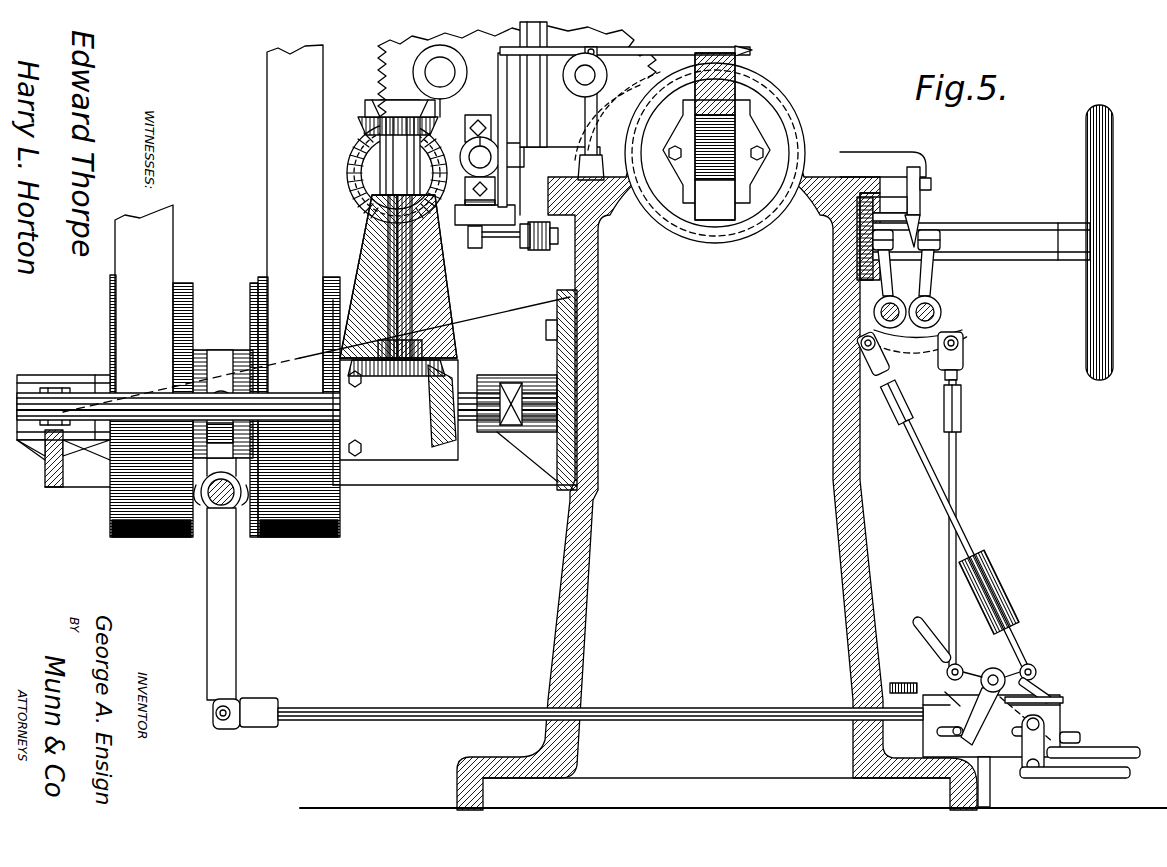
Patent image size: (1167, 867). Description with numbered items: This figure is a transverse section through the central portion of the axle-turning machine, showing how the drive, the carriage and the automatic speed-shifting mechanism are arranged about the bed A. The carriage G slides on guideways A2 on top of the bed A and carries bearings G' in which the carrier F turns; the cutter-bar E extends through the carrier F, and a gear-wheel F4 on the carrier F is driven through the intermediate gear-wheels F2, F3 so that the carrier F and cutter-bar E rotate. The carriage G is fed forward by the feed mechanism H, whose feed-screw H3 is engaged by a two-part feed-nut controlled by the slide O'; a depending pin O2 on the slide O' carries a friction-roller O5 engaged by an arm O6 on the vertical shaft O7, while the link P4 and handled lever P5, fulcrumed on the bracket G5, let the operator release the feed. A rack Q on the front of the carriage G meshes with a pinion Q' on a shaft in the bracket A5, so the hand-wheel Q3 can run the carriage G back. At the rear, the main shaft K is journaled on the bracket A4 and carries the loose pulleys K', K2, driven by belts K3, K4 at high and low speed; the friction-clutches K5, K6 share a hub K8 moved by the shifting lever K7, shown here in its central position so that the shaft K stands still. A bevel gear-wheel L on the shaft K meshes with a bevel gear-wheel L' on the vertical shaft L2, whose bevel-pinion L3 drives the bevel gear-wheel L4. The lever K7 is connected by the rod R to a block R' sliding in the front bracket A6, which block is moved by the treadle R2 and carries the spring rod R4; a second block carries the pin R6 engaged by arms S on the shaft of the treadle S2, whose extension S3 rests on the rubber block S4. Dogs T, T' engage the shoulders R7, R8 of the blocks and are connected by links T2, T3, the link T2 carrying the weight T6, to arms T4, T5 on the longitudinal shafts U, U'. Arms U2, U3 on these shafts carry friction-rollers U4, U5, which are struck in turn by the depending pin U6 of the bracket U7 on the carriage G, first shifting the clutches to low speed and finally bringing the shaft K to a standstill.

The bed A is at (717, 459).
The guideways A2 is at (578, 180).
The bracket A4 is at (430, 487).
The bracket A5 is at (1000, 260).
The bracket A6 is at (998, 745).
The cutter-bar E is at (740, 80).
The carrier F is at (770, 125).
The intermediate gear-wheel F2 is at (378, 58).
The second intermediate gear-wheel F3 is at (628, 40).
The gear-wheel F4 is at (683, 90).
The carriage G is at (723, 118).
The bearings G' is at (724, 148).
The bracket G5 is at (598, 110).
The feed mechanism H is at (492, 134).
The feed-screw H3 is at (468, 142).
The main shaft K is at (287, 421).
The pulley K' is at (63, 400).
The pulley K2 is at (262, 277).
The belt K3 is at (116, 258).
The belt K4 is at (267, 210).
The friction-clutch K5 is at (188, 326).
The friction-clutch K6 is at (252, 290).
The shifting lever K7 is at (207, 600).
The hub K8 is at (230, 338).
The bevel gear-wheel L is at (412, 398).
The bevel gear-wheel L' is at (408, 390).
The vertically-disposed shaft L2 is at (432, 292).
The bevel-pinion L3 is at (362, 122).
The bevel gear-wheel L4 is at (368, 205).
The slide O' is at (476, 208).
The depending pin O2 is at (485, 243).
The friction-roller O5 is at (470, 240).
The arm O6 is at (521, 242).
The shaft O7 is at (540, 248).
The link P4 is at (505, 58).
The handled lever P5 is at (745, 47).
The rack Q is at (882, 238).
The pinion Q' is at (844, 236).
The hand-wheel Q3 is at (1090, 195).
The rod R is at (581, 705).
The block R' is at (1050, 697).
The treadle R2 is at (1100, 778).
The rod R4 is at (1080, 736).
The pin R6 is at (950, 728).
The shoulder R7 is at (1050, 698).
The shoulder R8 is at (946, 690).
The arms S is at (1007, 714).
The treadle S2 is at (1112, 746).
The extension S3 is at (920, 624).
The rubber block S4 is at (900, 683).
The dog T is at (1000, 667).
The dog T' is at (990, 660).
The link T2 is at (966, 540).
The link T3 is at (957, 460).
The arm T4 is at (886, 366).
The arm T5 is at (940, 356).
The weight T6 is at (1004, 595).
The shaft U is at (920, 324).
The shaft U' is at (855, 312).
The arm U2 is at (939, 273).
The arm U3 is at (894, 263).
The friction-roller U4 is at (943, 228).
The friction-roller U5 is at (880, 225).
The depending pin U6 is at (916, 222).
The bracket U7 is at (931, 186).